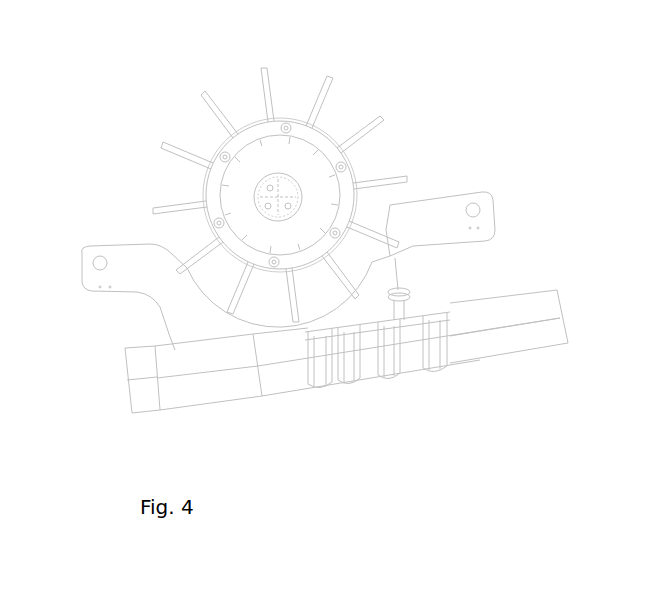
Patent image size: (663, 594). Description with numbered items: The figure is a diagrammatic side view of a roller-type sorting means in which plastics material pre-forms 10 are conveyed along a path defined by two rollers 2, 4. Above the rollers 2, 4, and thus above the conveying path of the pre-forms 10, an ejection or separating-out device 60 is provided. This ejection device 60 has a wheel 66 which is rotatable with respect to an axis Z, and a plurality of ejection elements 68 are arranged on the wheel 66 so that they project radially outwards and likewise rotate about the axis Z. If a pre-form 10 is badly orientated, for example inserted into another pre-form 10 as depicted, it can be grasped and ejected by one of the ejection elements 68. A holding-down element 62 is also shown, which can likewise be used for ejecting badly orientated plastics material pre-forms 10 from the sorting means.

The ejection or separating-out device 60 is at (405, 160).
The wheel 66 is at (213, 185).
The axis Z is at (280, 195).
The ejection elements 68 is at (262, 86).
The holding-down element 62 is at (388, 253).
The roller 2 is at (293, 373).
The plastics material pre-forms 10 is at (372, 362).
The roller 4 is at (473, 355).